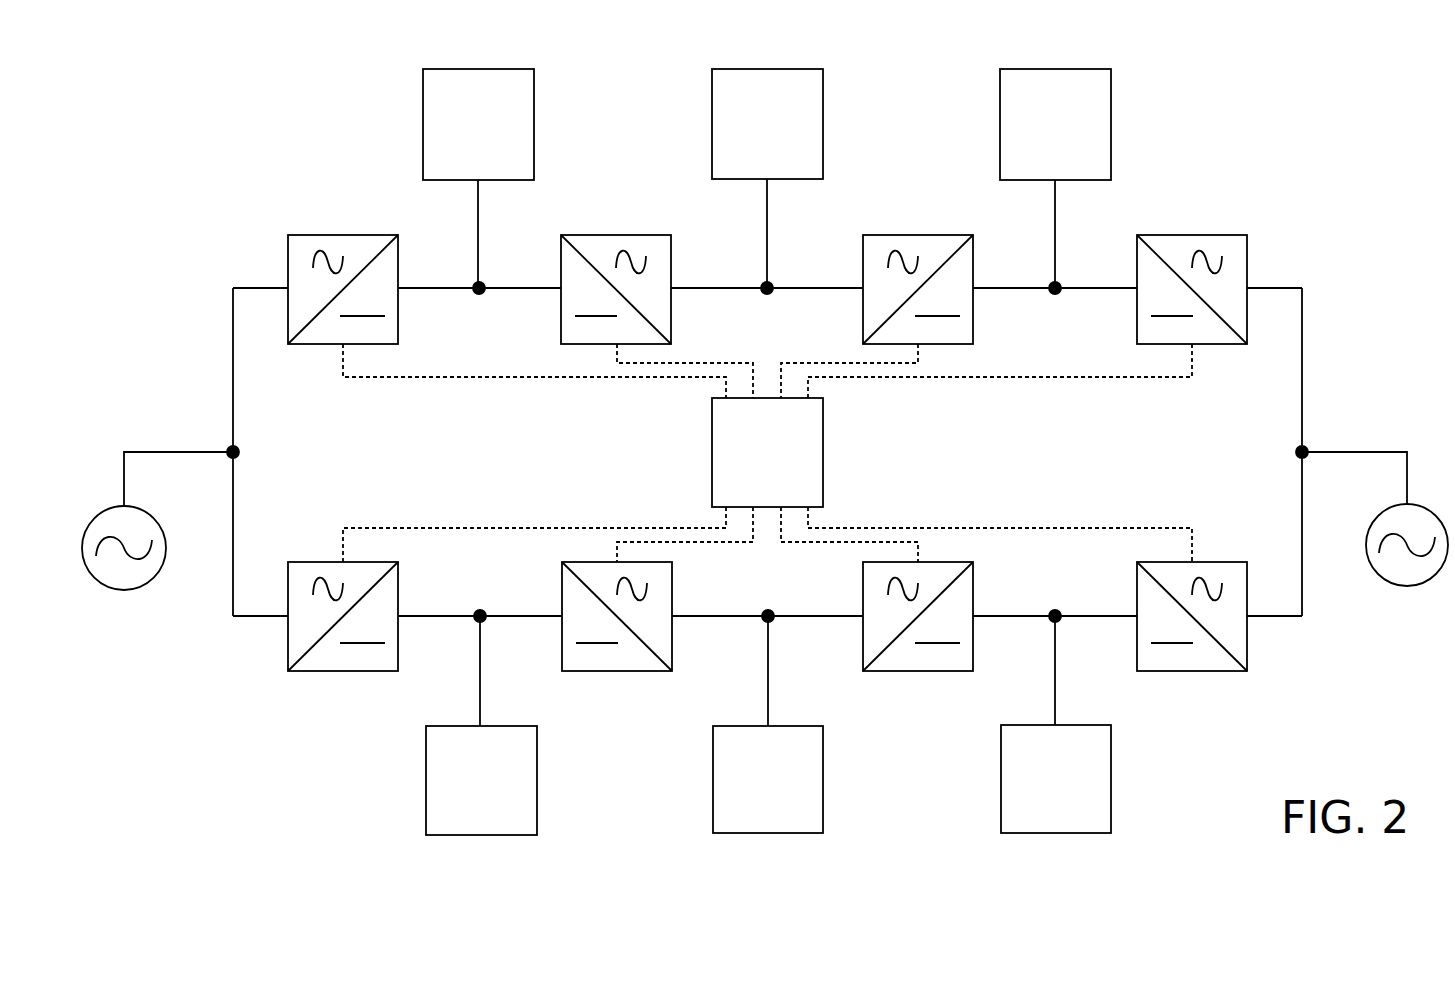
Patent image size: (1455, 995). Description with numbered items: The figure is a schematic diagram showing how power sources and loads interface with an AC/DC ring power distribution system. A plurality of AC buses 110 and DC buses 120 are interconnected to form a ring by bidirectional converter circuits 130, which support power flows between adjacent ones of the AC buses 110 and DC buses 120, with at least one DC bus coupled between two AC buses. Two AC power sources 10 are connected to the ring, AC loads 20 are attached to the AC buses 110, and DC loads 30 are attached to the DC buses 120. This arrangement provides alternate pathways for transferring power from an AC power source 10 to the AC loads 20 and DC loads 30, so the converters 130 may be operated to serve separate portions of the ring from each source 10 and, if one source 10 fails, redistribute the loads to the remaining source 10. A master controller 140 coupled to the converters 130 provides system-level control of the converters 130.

The AC power source 10 is at (124, 590).
The AC load 20 is at (767, 69).
The DC load 30 is at (478, 69).
The AC bus 110 is at (260, 288).
The DC bus 120 is at (505, 288).
The bidirectional converter circuit 130 is at (343, 235).
The master controller 140 is at (823, 450).